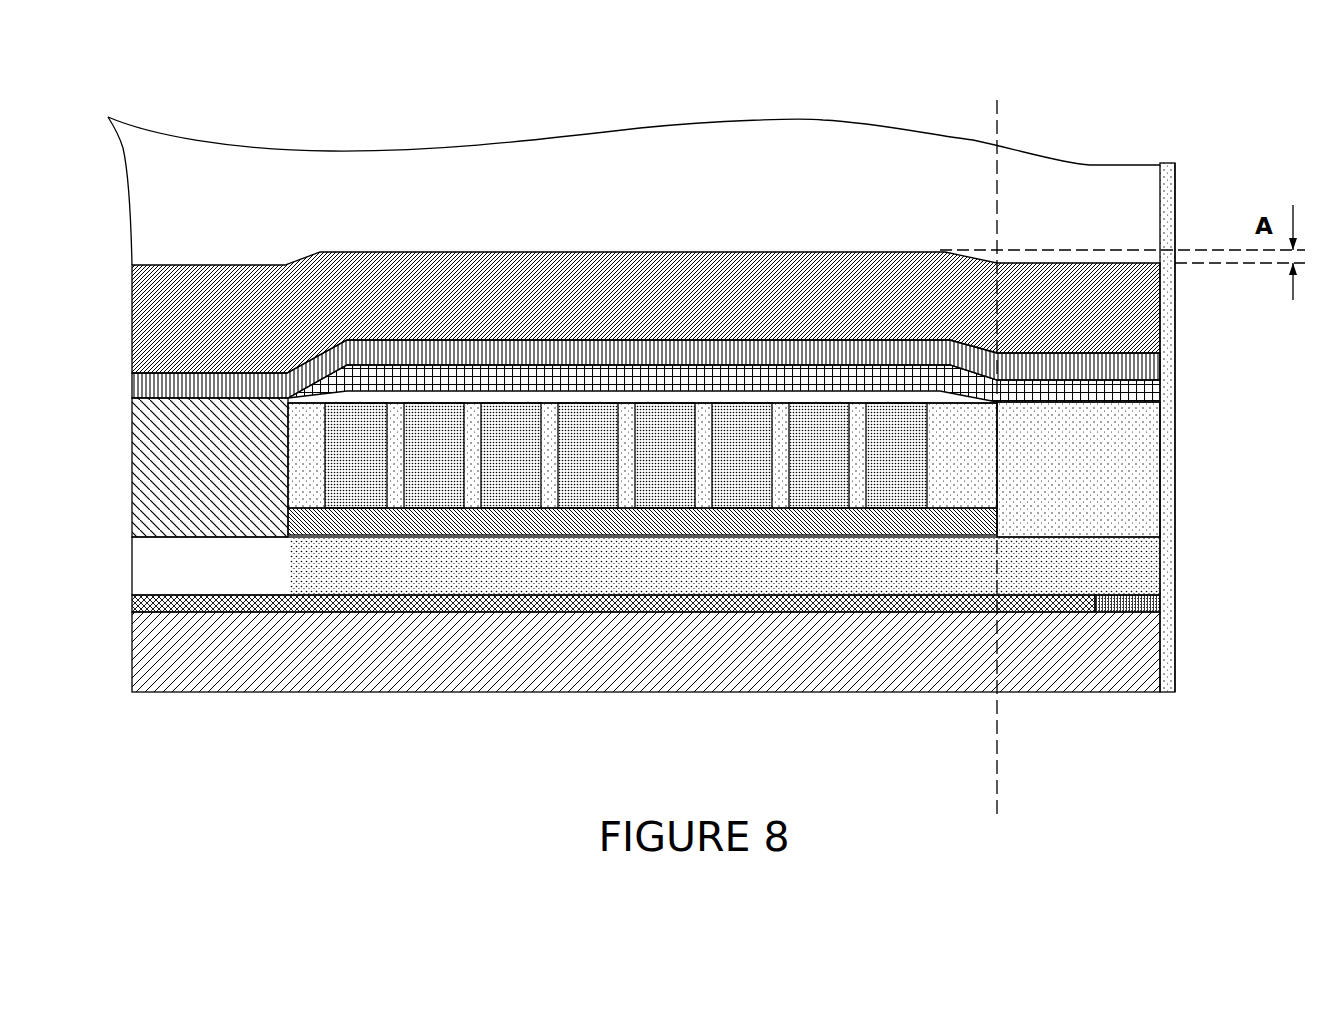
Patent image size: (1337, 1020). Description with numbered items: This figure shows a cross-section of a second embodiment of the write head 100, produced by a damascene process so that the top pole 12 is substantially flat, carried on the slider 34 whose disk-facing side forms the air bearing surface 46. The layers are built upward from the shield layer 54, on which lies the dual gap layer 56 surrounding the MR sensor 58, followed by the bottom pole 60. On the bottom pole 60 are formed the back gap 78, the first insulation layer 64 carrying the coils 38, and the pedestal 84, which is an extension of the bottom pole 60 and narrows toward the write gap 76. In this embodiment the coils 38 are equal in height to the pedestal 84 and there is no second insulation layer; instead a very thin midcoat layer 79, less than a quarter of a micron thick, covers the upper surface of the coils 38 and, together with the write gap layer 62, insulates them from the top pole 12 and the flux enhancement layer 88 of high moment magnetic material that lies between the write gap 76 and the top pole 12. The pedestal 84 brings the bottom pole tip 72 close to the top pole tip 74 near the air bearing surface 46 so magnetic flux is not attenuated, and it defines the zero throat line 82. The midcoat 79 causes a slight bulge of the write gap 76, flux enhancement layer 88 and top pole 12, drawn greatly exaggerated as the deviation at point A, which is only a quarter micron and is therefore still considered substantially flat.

The write head 100 is at (374, 124).
The zero throat line 82 is at (1008, 195).
The slider 34 is at (857, 182).
The midcoat layer 79 is at (398, 397).
The write gap layer 62 is at (431, 380).
The coil 38 is at (577, 467).
The top pole 12 is at (867, 293).
The top pole tip 74 is at (1170, 330).
The flux enhancement layer 88 is at (1153, 376).
The write gap 76 is at (1153, 398).
The pedestal 84 is at (1150, 462).
The bottom pole tip 72 is at (1177, 427).
The back gap 78 is at (183, 462).
The first insulation layer 64 is at (552, 535).
The bottom pole 60 is at (680, 560).
The dual gap layer 56 is at (802, 600).
The shield layer 54 is at (1028, 663).
The MR sensor 58 is at (1157, 602).
The air bearing surface 46 is at (1190, 562).